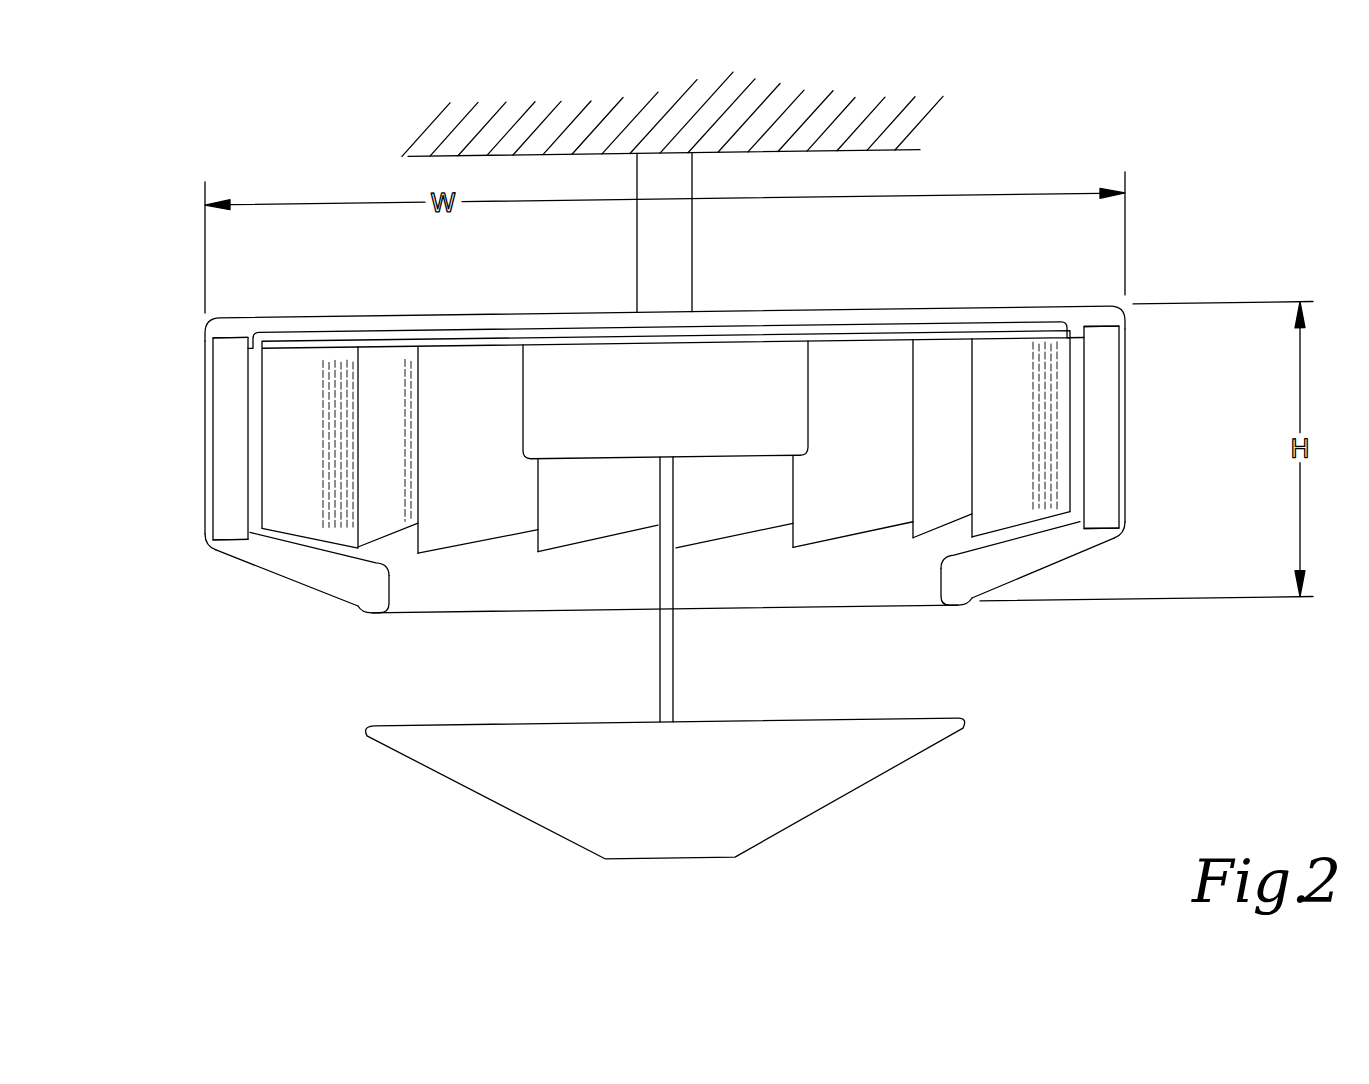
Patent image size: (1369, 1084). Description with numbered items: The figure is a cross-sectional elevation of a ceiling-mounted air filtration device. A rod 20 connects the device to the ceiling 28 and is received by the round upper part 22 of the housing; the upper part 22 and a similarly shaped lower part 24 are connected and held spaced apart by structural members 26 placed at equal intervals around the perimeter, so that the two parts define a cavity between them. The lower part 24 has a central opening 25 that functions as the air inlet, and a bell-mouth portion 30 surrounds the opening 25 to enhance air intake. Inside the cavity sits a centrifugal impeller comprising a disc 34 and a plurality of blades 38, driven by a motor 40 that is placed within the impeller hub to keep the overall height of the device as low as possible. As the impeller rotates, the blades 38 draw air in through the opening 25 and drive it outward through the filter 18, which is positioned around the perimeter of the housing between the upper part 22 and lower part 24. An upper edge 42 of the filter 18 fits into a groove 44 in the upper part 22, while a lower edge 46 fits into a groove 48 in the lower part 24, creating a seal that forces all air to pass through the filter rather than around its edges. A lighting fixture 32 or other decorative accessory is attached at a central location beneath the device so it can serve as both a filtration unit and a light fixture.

The filter 18 is at (228, 400).
The rod 20 is at (653, 272).
The upper part 22 is at (335, 326).
The lower part 24 is at (315, 567).
The opening 25 is at (423, 597).
The structural members 26 is at (205, 466).
The ceiling 28 is at (440, 131).
The bell-mouth portion 30 is at (372, 611).
The lighting fixture 32 is at (815, 802).
The disc 34 is at (452, 338).
The blades 38 is at (382, 367).
The motor 40 is at (762, 366).
The upper edge 42 is at (220, 341).
The groove 44 is at (242, 325).
The lower edge 46 is at (218, 527).
The groove 48 is at (220, 542).